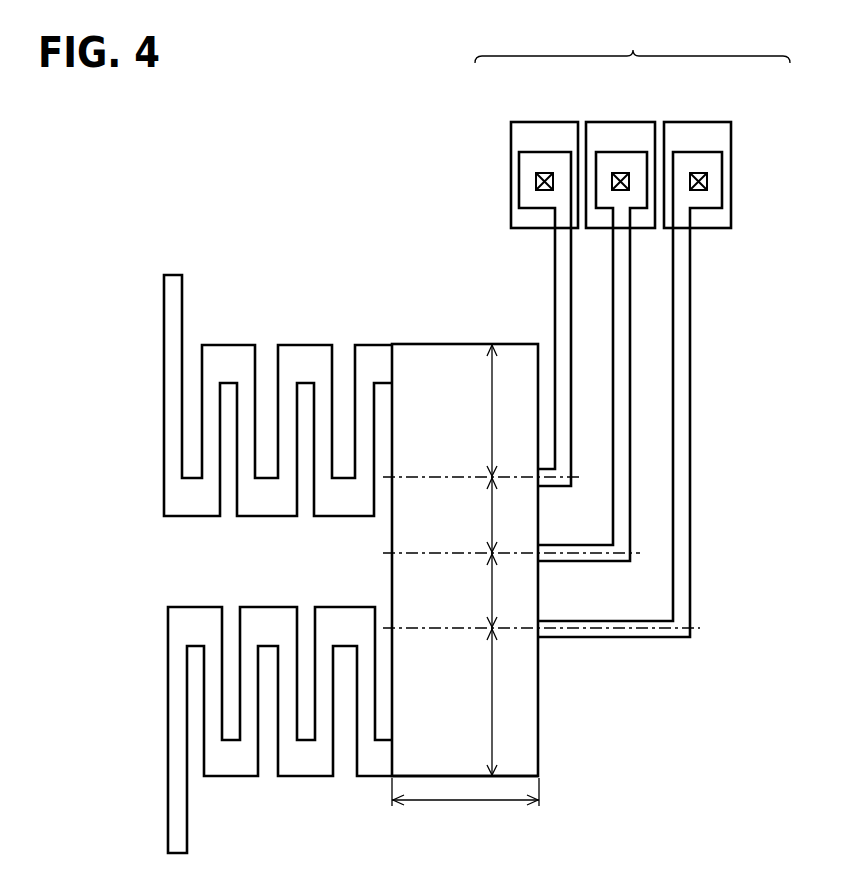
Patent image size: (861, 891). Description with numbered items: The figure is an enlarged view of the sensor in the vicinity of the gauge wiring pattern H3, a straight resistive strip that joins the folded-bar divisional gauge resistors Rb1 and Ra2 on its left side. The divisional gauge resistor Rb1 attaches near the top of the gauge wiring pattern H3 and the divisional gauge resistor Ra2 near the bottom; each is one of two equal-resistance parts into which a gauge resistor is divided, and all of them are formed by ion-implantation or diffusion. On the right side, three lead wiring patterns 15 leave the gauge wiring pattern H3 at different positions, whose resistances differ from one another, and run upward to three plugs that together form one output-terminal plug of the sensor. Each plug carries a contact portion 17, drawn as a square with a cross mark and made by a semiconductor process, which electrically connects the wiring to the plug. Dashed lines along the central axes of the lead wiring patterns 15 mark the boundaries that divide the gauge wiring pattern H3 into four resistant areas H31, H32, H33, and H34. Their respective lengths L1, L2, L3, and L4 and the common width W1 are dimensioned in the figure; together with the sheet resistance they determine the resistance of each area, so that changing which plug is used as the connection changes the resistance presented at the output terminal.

The contact portion 17 is at (707, 178).
The lead wiring pattern 15 is at (557, 271).
The divisional gauge resistor Rb1 is at (302, 355).
The divisional gauge resistor Ra2 is at (307, 763).
The gauge wiring pattern H3 is at (435, 367).
The resistant area H34 is at (458, 430).
The resistant area H33 is at (458, 530).
The resistant area H32 is at (458, 607).
The resistant area H31 is at (458, 717).
The length L4 is at (507, 410).
The length L3 is at (507, 515).
The length L2 is at (507, 590).
The length L1 is at (507, 702).
The width W1 is at (465, 803).